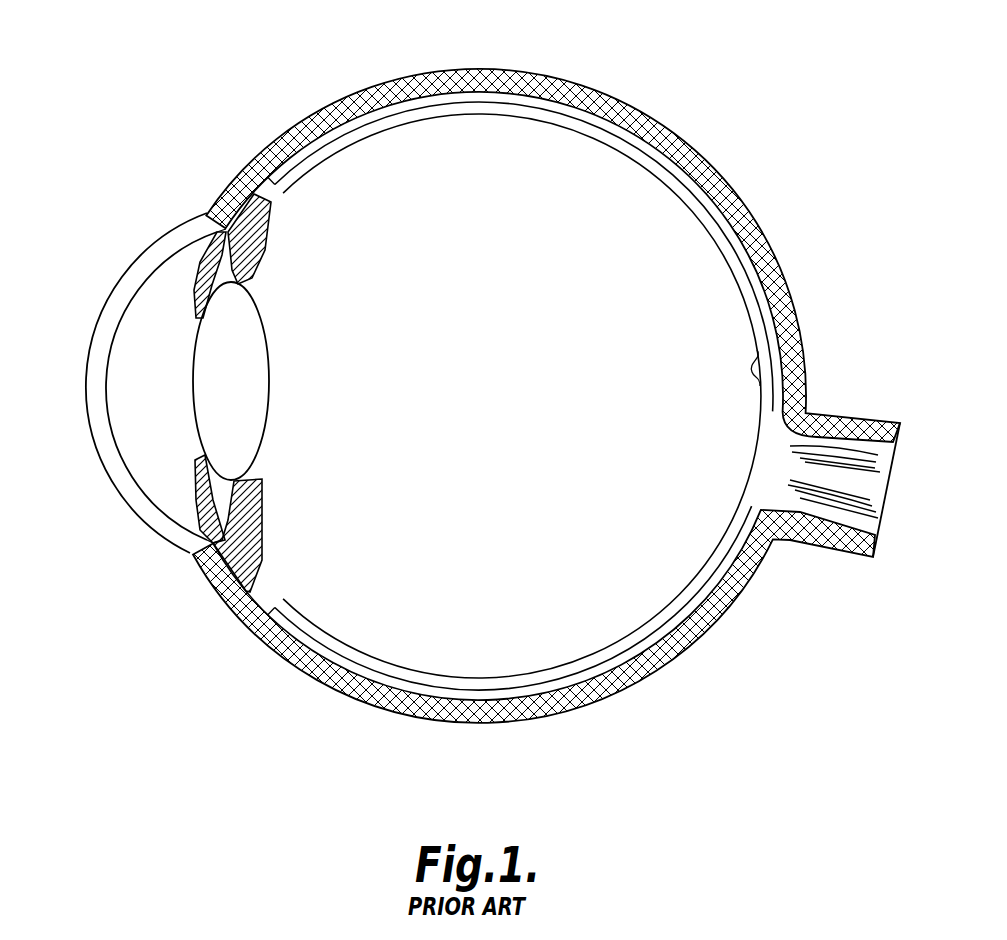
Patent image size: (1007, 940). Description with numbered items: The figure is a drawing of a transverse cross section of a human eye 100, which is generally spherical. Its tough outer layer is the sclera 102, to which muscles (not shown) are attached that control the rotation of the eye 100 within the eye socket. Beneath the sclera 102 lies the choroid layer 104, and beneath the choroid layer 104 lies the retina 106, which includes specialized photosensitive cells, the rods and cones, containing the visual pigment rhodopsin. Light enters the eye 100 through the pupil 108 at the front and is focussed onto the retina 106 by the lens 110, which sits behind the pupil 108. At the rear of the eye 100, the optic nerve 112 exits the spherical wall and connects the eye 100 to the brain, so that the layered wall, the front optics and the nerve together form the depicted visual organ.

The human eye 100 is at (222, 35).
The sclera 102 is at (652, 124).
The choroid layer 104 is at (726, 185).
The retina 106 is at (757, 333).
The pupil 108 is at (105, 342).
The lens 110 is at (213, 423).
The optic nerve 112 is at (838, 508).